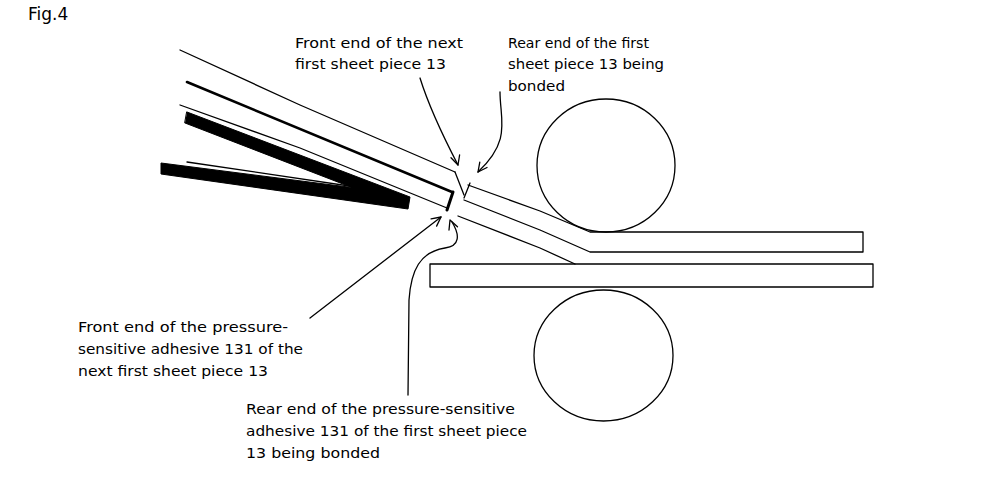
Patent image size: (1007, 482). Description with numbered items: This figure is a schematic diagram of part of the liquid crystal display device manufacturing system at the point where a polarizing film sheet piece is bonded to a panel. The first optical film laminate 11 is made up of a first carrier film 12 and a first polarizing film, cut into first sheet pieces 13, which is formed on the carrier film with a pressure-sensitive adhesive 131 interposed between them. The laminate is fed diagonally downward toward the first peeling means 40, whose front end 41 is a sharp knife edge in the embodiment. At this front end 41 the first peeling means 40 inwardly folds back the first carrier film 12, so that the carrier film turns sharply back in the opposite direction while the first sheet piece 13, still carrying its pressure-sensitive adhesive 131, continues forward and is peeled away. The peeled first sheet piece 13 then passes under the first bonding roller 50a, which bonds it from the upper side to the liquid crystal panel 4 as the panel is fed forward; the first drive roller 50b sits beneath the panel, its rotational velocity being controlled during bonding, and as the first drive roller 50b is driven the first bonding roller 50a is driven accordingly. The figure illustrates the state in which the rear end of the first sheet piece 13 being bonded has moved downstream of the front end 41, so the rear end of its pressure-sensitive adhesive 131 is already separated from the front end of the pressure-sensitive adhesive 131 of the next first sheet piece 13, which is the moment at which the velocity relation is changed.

The first optical film laminate 11 is at (142, 32).
The first sheet piece 13 is at (212, 80).
The pressure-sensitive adhesive 131 is at (203, 102).
The first carrier film 12 is at (187, 105).
The first peeling means 40 is at (205, 155).
The front end 41 is at (340, 213).
The liquid crystal panel 4 is at (475, 285).
The first bonding roller 50a is at (667, 160).
The first drive roller 50b is at (660, 375).